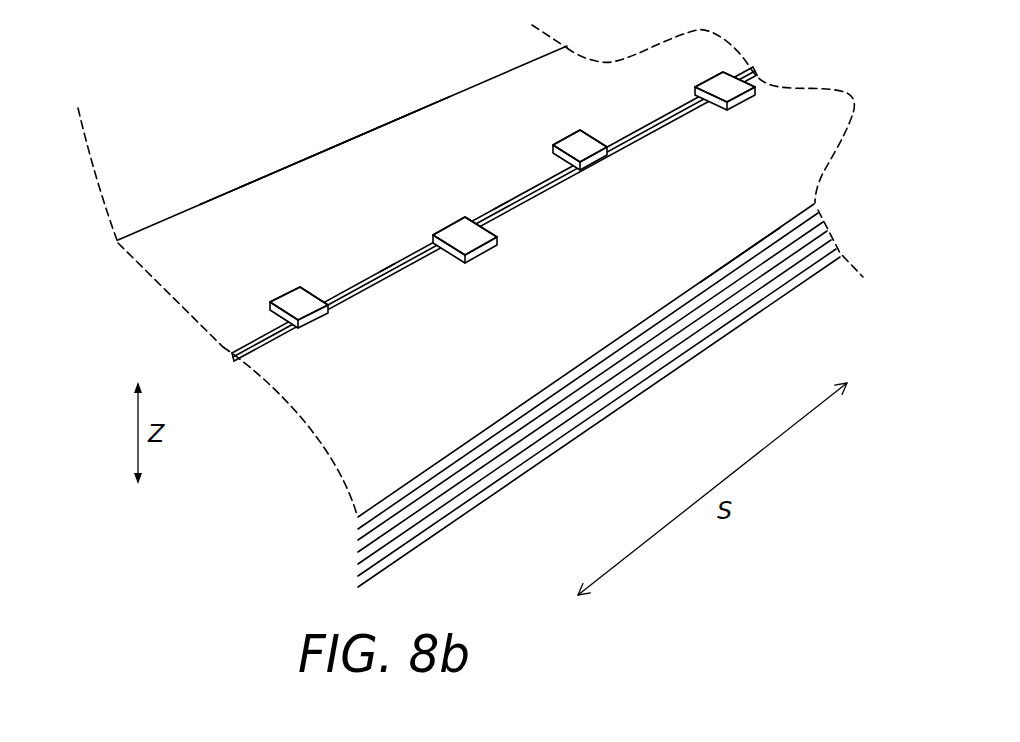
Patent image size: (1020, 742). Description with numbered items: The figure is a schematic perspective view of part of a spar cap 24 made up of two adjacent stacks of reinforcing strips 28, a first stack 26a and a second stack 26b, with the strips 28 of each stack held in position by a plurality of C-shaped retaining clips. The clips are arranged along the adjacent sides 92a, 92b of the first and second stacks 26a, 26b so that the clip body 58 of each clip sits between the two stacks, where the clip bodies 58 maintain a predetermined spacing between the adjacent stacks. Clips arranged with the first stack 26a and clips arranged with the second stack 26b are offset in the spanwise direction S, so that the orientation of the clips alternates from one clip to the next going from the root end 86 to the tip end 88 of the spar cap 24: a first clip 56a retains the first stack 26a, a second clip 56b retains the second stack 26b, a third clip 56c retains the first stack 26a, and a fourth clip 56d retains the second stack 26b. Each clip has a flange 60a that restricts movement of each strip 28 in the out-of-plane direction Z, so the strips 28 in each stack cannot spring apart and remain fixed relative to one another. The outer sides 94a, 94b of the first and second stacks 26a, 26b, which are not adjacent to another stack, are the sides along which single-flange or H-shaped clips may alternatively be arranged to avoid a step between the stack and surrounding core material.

The spar cap 24 is at (214, 79).
The first stack 26a is at (283, 194).
The second stack 26b is at (415, 364).
The strips 28 is at (392, 160).
The first clip 56a is at (268, 289).
The second clip 56b is at (504, 253).
The third clip 56c is at (552, 126).
The fourth clip 56d is at (758, 106).
The clip body 58 is at (304, 326).
The flange 60a is at (293, 298).
The root end 86 is at (128, 213).
The tip end 88 is at (527, 44).
The adjacent side of the first stack 92a is at (386, 268).
The adjacent side of the second stack 92b is at (500, 206).
The side of the first stack 94a is at (322, 150).
The side of the second stack 94b is at (661, 357).